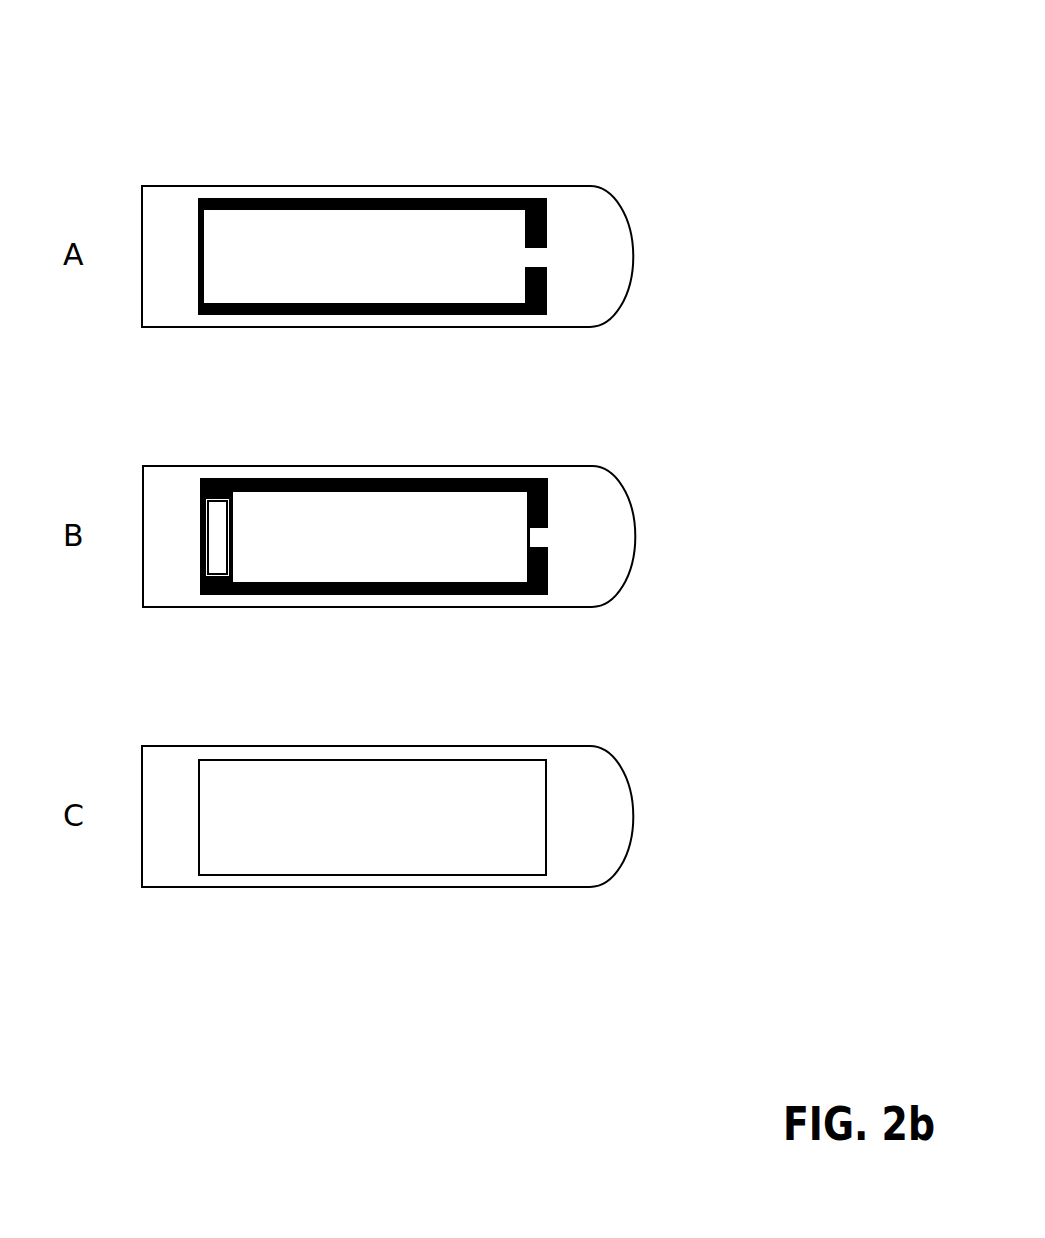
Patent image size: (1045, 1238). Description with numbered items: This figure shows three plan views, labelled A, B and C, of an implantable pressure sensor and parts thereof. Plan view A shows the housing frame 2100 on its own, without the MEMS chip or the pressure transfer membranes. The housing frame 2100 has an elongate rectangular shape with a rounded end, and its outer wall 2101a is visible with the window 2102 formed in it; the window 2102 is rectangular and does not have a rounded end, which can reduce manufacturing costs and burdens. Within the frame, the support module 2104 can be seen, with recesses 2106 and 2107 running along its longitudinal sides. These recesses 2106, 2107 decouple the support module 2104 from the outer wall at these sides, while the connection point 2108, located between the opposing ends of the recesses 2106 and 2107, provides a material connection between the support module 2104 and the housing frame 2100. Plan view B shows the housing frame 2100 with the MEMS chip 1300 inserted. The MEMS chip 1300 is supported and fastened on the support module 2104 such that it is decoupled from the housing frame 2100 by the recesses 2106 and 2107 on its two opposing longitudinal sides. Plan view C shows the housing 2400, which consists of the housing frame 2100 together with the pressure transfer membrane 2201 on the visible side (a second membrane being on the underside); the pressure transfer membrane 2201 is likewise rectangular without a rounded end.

The housing frame 2100 is at (605, 155).
The outer wall 2101a is at (183, 205).
The window 2102 is at (333, 198).
The support module 2104 is at (337, 247).
The recess 2106 is at (452, 198).
The recess 2107 is at (547, 312).
The connection point 2108 is at (537, 258).
The MEMS chip 1300 is at (377, 525).
The housing 2400 is at (302, 733).
The pressure transfer membrane 2201 is at (500, 845).